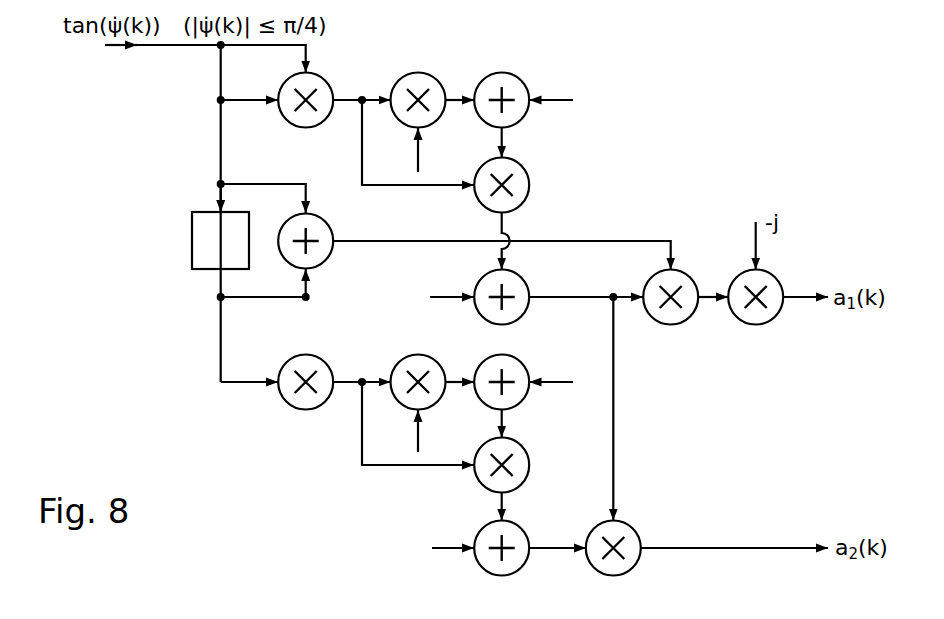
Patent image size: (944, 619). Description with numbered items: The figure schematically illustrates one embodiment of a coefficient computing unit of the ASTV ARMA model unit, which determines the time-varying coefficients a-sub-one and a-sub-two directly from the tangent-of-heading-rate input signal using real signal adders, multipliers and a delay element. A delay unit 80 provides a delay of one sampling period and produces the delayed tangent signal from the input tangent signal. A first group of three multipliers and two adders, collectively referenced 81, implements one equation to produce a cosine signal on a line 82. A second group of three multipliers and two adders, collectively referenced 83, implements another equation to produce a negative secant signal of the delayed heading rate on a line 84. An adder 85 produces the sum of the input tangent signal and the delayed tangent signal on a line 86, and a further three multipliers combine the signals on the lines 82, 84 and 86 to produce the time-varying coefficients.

The delay unit 80 is at (198, 238).
The first group of three multipliers and two adders 81 is at (576, 156).
The line 82 is at (566, 296).
The second group of three multipliers and two adders 83 is at (575, 439).
The line 84 is at (556, 547).
The adder 85 is at (320, 252).
The line 86 is at (580, 241).